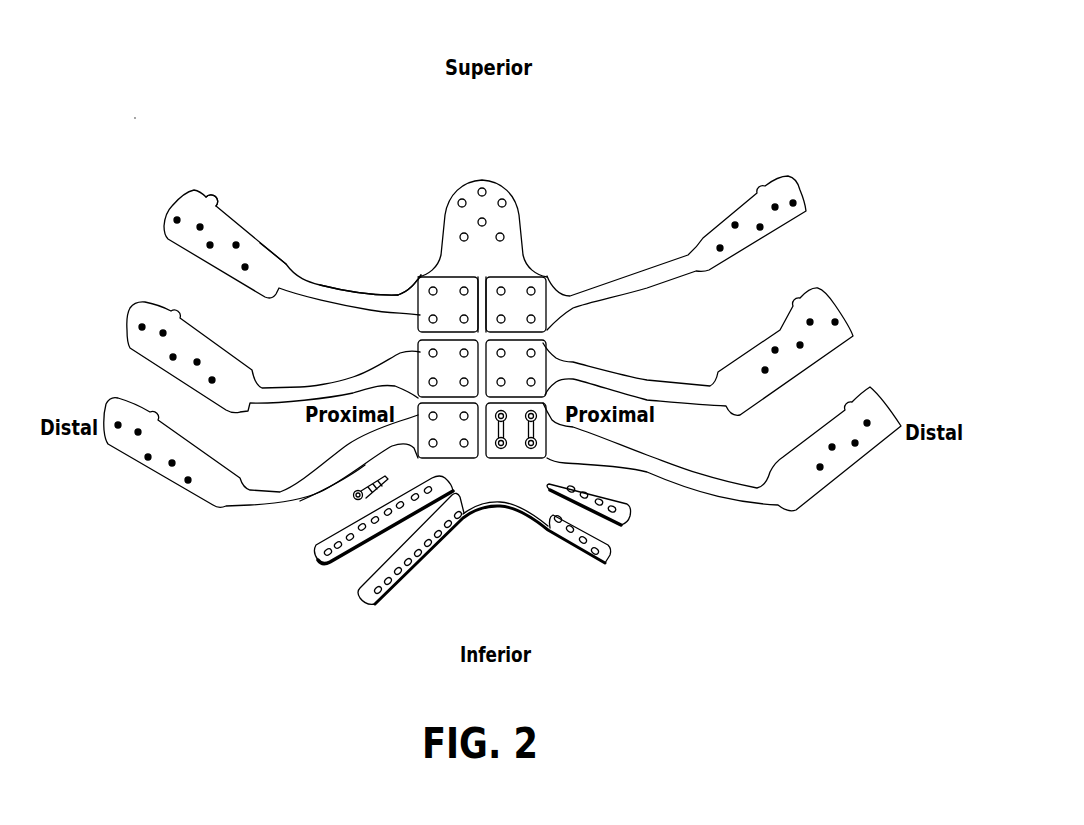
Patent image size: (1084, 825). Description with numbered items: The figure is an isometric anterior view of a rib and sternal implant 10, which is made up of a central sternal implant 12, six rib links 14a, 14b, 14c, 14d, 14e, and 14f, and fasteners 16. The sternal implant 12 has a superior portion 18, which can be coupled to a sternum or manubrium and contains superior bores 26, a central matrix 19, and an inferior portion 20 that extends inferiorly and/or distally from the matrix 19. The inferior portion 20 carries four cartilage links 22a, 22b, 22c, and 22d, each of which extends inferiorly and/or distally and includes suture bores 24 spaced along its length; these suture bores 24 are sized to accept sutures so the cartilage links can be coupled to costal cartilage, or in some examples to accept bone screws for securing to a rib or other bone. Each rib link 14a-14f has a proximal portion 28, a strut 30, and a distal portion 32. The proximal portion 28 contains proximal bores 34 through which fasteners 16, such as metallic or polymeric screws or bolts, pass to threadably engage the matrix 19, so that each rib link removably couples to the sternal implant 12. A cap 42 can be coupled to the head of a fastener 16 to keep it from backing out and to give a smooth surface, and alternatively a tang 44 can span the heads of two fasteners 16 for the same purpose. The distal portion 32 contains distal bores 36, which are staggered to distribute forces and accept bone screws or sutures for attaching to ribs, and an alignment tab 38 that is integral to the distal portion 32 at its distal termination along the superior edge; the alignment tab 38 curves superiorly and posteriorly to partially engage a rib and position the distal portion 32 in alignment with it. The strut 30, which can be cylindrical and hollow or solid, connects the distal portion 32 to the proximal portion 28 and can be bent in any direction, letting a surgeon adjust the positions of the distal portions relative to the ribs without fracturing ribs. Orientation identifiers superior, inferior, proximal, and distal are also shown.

The implant 10 is at (128, 114).
The sternal implant 12 is at (415, 190).
The rib link 14a is at (170, 202).
The rib link 14b is at (128, 300).
The rib link 14c is at (108, 396).
The rib link 14d is at (808, 182).
The rib link 14e is at (859, 298).
The rib link 14f is at (906, 406).
The fasteners 16 is at (352, 498).
The superior portion 18 is at (517, 252).
The matrix 19 is at (548, 333).
The inferior portion 20 is at (501, 509).
The cartilage link 22a is at (320, 570).
The cartilage link 22b is at (370, 612).
The cartilage link 22c is at (626, 522).
The cartilage link 22d is at (600, 568).
The suture bores 24 is at (594, 554).
The superior bores 26 is at (501, 199).
The proximal portion 28 is at (409, 292).
The strut 30 is at (345, 292).
The distal portion 32 is at (266, 258).
The proximal bores 34 is at (461, 295).
The distal bores 36 is at (243, 268).
The alignment tabs 38 is at (210, 203).
The cap 42 is at (362, 487).
The tang 44 is at (538, 432).